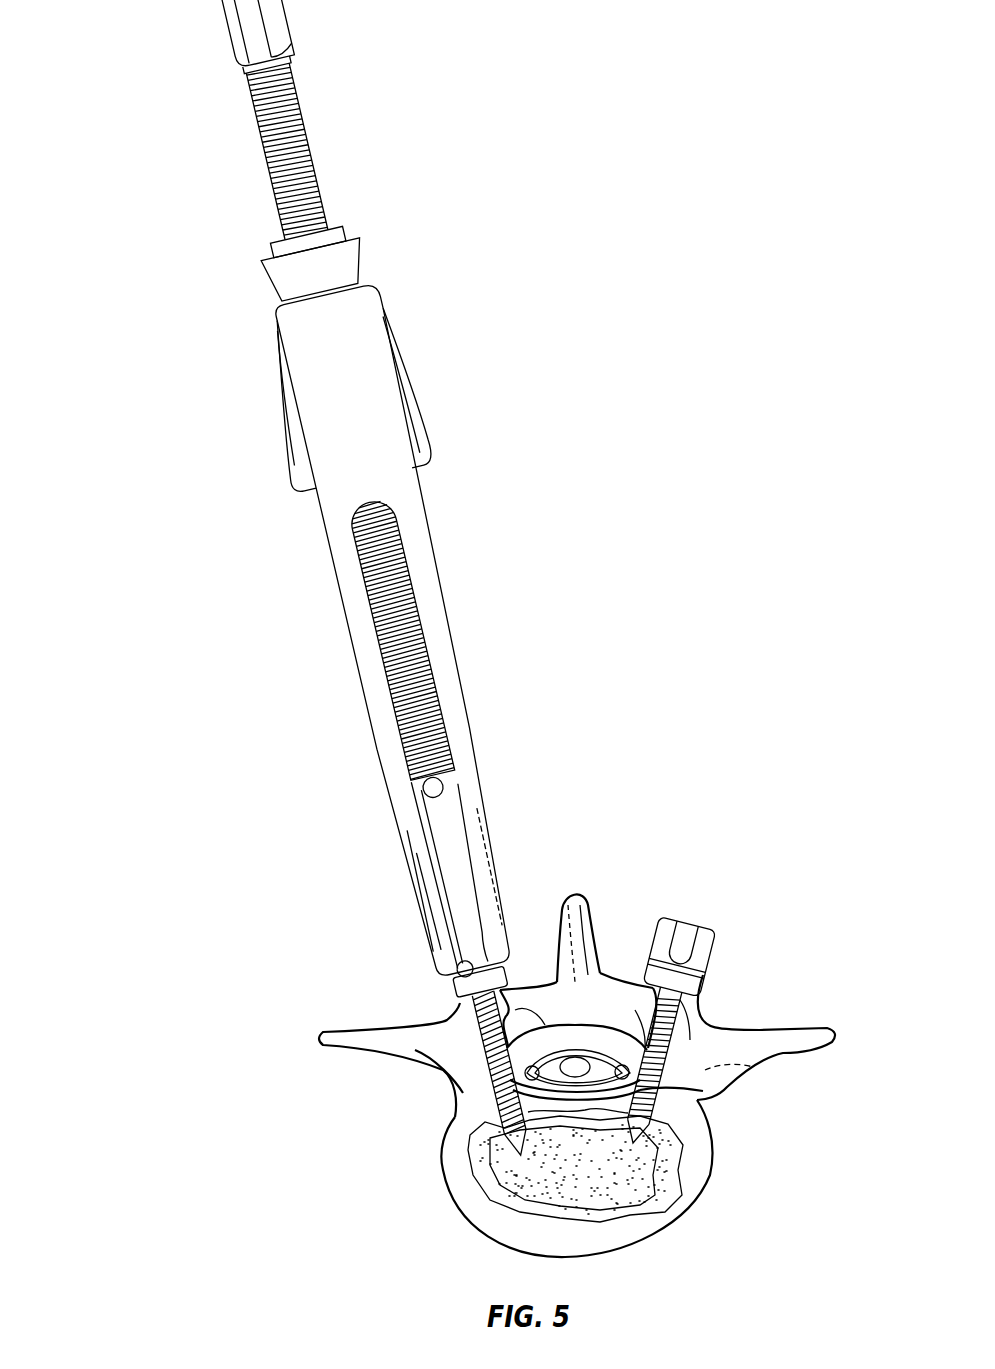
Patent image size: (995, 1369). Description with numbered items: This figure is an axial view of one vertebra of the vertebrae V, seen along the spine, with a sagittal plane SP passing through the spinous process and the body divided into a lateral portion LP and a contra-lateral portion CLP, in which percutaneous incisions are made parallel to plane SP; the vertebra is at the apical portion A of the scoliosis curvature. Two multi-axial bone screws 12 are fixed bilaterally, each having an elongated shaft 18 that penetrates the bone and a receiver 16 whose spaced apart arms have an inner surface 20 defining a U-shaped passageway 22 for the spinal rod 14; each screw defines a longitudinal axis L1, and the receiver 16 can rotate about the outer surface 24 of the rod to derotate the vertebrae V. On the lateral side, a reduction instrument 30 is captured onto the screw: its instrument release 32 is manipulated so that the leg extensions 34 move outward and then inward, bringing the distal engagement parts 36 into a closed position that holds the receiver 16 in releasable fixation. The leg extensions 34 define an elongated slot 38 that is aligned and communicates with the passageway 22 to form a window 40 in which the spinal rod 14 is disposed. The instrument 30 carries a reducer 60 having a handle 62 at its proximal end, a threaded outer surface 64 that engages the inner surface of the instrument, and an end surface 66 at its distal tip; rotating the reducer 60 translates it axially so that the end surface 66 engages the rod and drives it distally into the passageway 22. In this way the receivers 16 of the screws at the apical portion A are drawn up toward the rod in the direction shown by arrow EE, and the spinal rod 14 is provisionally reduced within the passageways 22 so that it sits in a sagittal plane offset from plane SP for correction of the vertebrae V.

The multi-axial bone screw 12 is at (440, 998).
The spinal rod 14 is at (453, 778).
The receiver 16 is at (702, 1036).
The elongated shaft 18 is at (673, 1030).
The inner surface 20 is at (466, 971).
The U-shaped passageway 22 is at (470, 946).
The outer surface 24 is at (420, 806).
The reduction instrument 30 is at (414, 596).
The instrument release 32 is at (423, 449).
The leg extensions 34 is at (407, 848).
The distal engagement parts 36 is at (443, 951).
The elongated slot 38 is at (447, 823).
The window 40 is at (466, 892).
The reducer 60 is at (249, 136).
The handle 62 is at (247, 30).
The outer surface 64 is at (295, 158).
The end surface 66 is at (420, 758).
The sagittal plane SP is at (575, 880).
The longitudinal axis L1 is at (687, 935).
The arrow EE is at (219, 793).
The lateral portion LP is at (417, 1105).
The contra-lateral portion CLP is at (747, 1096).
The vertebrae V is at (428, 1219).
The apical portion A is at (677, 1222).